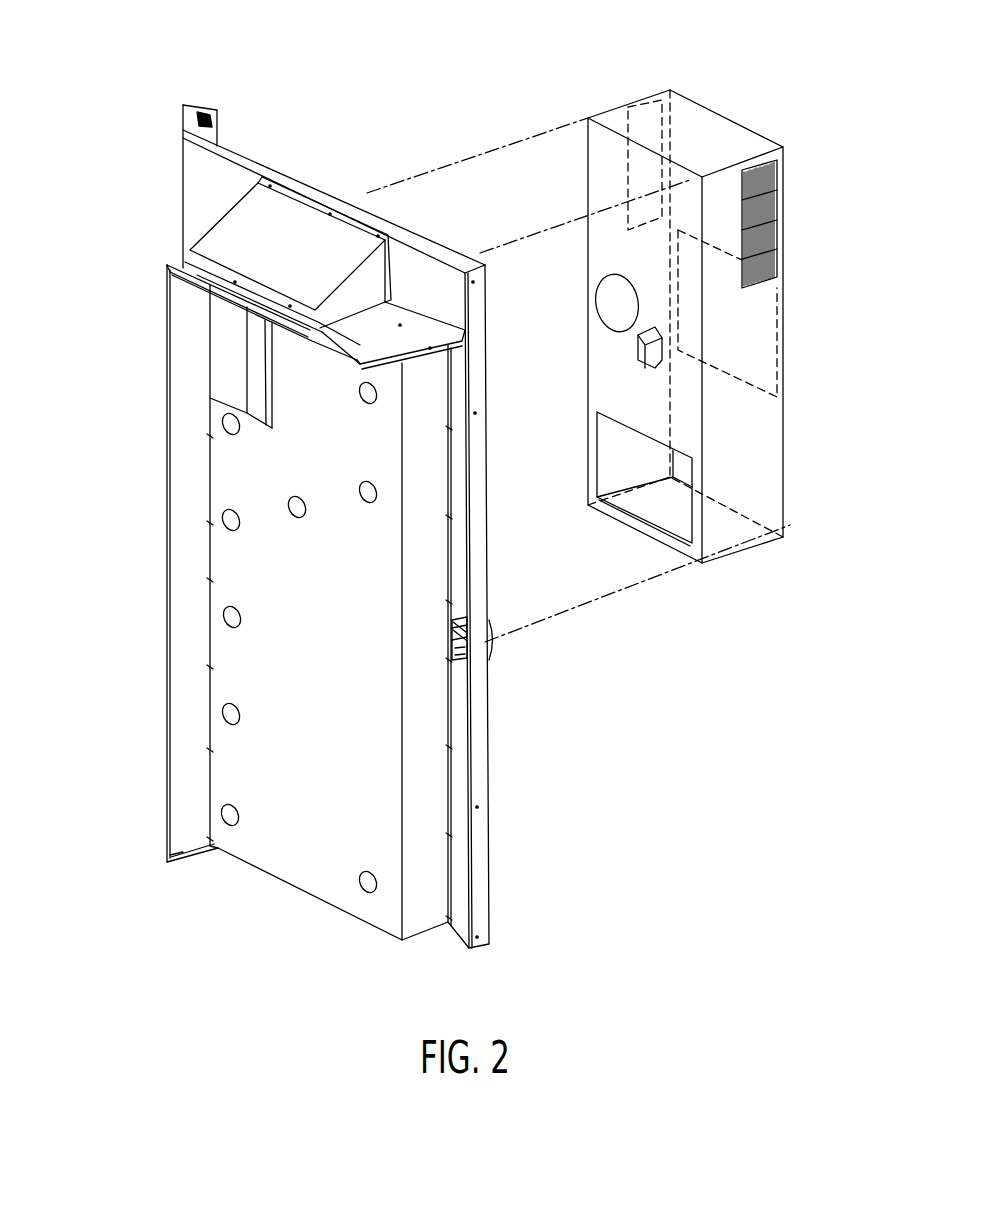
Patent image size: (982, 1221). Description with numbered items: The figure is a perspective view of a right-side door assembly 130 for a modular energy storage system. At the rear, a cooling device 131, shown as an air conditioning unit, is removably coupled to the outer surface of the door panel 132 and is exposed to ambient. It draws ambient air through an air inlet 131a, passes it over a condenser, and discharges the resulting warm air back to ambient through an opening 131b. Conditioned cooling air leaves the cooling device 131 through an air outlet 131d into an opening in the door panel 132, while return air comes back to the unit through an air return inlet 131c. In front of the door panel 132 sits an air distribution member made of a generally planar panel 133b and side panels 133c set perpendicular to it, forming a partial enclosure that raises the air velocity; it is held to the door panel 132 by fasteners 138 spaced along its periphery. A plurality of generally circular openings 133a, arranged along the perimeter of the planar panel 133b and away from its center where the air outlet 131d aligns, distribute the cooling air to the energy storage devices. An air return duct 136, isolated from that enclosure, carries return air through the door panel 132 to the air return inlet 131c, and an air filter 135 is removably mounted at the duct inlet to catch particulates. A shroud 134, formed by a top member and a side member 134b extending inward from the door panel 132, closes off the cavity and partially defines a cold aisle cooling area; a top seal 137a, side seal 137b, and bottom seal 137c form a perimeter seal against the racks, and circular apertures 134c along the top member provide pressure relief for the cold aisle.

The door assembly 130 is at (387, 140).
The cooling device 131 is at (708, 125).
The air inlet 131a is at (633, 105).
The opening 131b is at (770, 328).
The air return inlet 131c is at (617, 305).
The air outlet 131d is at (662, 510).
The door panel 132 is at (195, 157).
The openings 133a is at (369, 405).
The generally planar panel 133b is at (362, 658).
The side panels 133c is at (425, 857).
The shroud 134 is at (152, 256).
The side member 134b is at (181, 829).
The apertures 134c is at (205, 262).
The air filter 135 is at (265, 222).
The air return duct 136 is at (222, 348).
The top seal 137a is at (195, 280).
The side seal 137b is at (168, 415).
The bottom seal 137c is at (194, 857).
The fasteners 138 is at (209, 436).